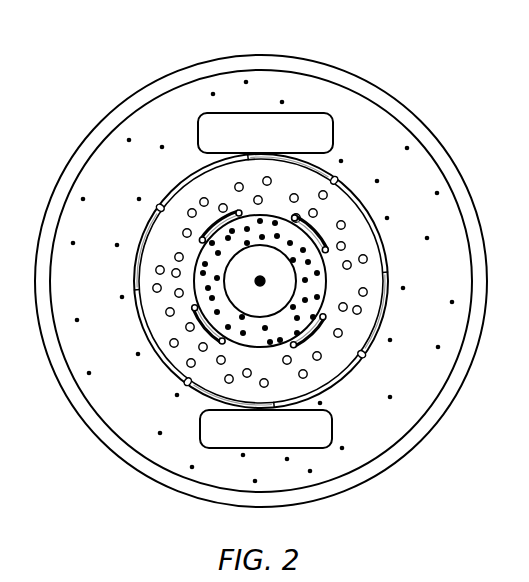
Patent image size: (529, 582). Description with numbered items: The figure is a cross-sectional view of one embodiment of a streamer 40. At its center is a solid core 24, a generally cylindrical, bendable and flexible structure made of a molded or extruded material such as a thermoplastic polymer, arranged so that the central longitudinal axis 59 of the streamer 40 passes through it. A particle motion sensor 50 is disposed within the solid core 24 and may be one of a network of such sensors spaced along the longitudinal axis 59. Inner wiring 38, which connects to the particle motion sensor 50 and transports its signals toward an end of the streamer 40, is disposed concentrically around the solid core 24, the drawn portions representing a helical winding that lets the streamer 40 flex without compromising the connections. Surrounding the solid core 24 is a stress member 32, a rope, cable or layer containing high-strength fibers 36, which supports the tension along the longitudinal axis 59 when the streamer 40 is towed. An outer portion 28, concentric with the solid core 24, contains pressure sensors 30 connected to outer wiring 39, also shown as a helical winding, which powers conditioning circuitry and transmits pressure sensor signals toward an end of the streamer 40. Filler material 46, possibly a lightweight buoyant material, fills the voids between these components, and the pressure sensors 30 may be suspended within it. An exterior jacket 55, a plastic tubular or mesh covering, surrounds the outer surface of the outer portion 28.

The streamer 40 is at (362, 50).
The exterior jacket 55 is at (457, 178).
The filler material 46 is at (92, 293).
The outer portion 28 is at (133, 173).
The pressure sensors 30 is at (327, 132).
The outer wiring 39 is at (148, 233).
The fibers 36 is at (203, 198).
The stress member 32 is at (185, 347).
The inner wiring 38 is at (305, 221).
The particle motion sensor 50 is at (224, 290).
The solid core 24 is at (292, 283).
The central longitudinal axis 59 is at (260, 281).